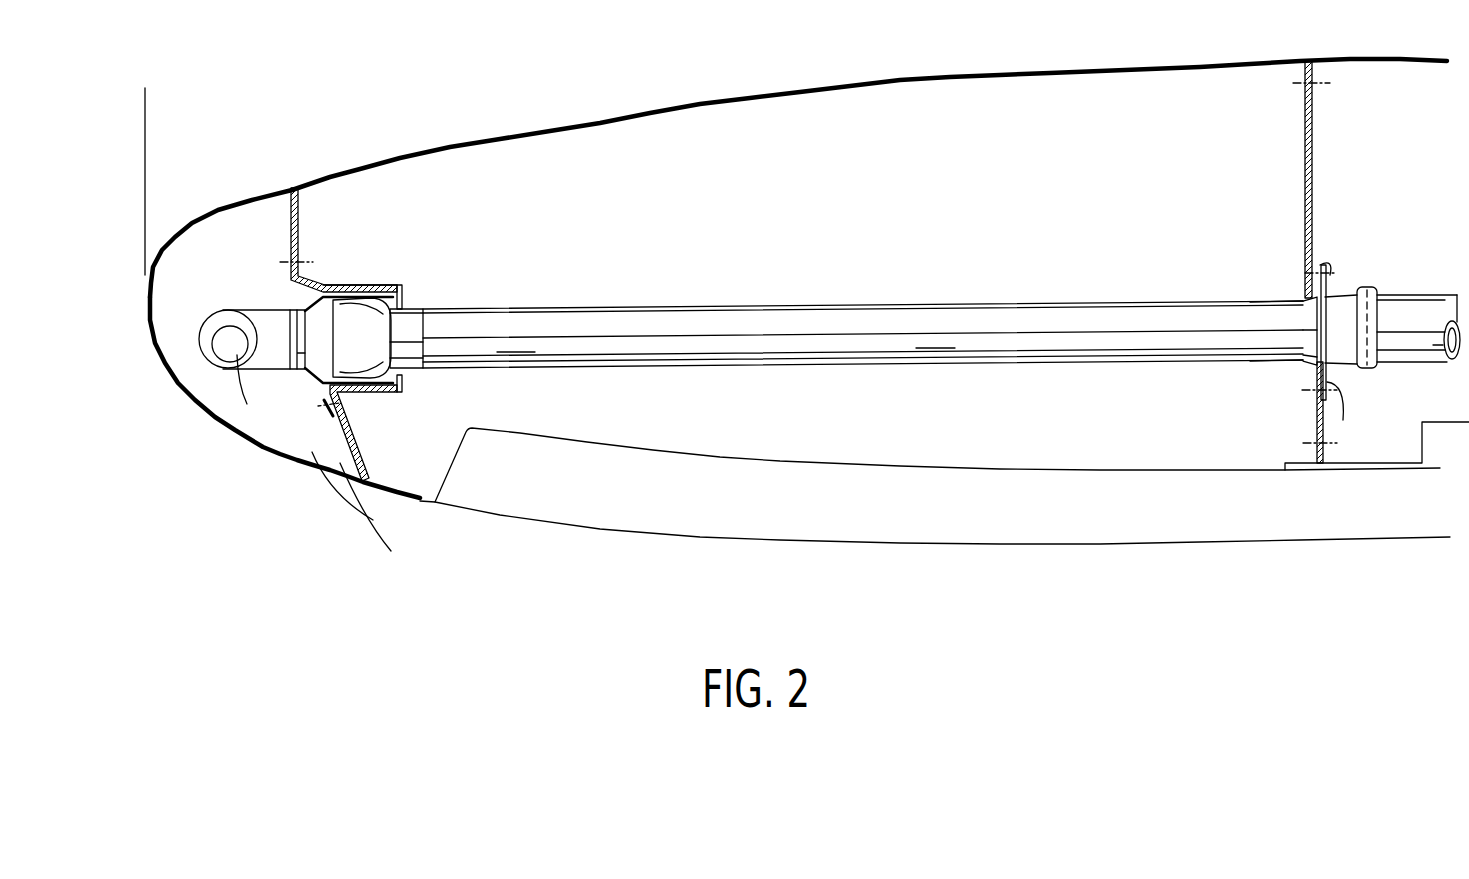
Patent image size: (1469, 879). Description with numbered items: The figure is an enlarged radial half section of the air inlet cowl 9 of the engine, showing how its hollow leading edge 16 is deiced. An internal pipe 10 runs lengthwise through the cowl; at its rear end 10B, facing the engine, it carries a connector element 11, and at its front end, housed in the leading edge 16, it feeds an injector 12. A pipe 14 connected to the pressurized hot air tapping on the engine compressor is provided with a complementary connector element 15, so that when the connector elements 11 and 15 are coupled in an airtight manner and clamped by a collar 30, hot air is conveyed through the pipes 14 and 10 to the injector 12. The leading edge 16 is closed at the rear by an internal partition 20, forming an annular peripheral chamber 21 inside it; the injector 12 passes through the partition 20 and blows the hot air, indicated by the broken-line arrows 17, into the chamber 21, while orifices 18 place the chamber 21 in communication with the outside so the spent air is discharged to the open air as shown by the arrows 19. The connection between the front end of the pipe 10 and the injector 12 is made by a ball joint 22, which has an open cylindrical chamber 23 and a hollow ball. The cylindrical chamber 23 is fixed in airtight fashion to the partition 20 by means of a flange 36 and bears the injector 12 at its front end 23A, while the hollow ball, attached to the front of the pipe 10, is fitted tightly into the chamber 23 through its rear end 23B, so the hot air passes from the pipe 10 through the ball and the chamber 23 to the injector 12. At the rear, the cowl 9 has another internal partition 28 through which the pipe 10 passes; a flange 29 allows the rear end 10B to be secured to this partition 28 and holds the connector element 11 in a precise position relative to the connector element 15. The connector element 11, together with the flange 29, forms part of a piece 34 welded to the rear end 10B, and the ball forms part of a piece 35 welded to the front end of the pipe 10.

The air inlet cowl 9 is at (709, 80).
The internal pipe 10 is at (433, 325).
The rear end of the pipe 10B is at (1253, 320).
The connector element 11 is at (1352, 287).
The injector 12 is at (263, 312).
The pipe 14 is at (1432, 300).
The complementary connector element 15 is at (1378, 290).
The hollow leading edge 16 is at (177, 383).
The hot air flow arrows 17 is at (244, 370).
The orifices 18 is at (330, 490).
The discharge air arrows 19 is at (351, 520).
The internal partition 20 is at (298, 218).
The annular peripheral chamber 21 is at (235, 233).
The ball joint 22 is at (364, 278).
The cylindrical chamber 23 is at (378, 287).
The front end of the cylindrical chamber 23A is at (330, 410).
The rear end of the cylindrical chamber 23B is at (455, 305).
The internal partition 28 is at (1313, 143).
The flange 29 is at (1316, 265).
The collar 30 is at (1372, 372).
The piece 34 is at (1312, 330).
The piece 35 is at (410, 357).
The flange 36 is at (305, 270).